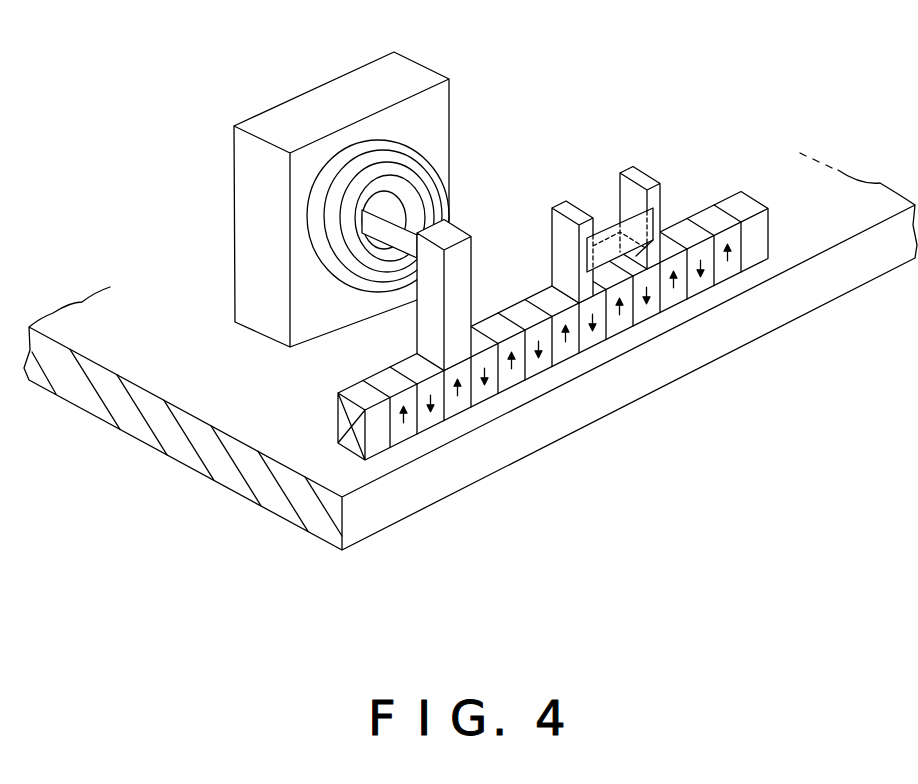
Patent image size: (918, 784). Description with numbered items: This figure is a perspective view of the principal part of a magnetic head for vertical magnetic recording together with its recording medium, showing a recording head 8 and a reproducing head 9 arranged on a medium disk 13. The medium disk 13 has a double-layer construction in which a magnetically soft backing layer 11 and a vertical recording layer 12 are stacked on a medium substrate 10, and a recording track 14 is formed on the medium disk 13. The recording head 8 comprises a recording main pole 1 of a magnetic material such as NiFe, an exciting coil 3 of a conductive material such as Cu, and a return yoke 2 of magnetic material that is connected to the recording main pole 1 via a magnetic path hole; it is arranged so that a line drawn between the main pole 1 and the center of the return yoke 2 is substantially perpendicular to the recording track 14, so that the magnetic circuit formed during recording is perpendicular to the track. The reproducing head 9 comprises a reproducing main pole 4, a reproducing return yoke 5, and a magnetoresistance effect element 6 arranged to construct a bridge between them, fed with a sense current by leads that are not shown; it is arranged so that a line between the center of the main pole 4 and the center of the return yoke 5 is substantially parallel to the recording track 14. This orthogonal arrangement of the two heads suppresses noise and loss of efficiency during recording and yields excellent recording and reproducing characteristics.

The recording main pole 1 is at (422, 317).
The return yoke 2 is at (245, 147).
The exciting coil 3 is at (315, 222).
The reproducing main pole 4 is at (570, 213).
The reproducing return yoke 5 is at (642, 178).
The magnetoresistance effect element 6 is at (607, 230).
The recording head 8 is at (271, 199).
The reproducing head 9 is at (611, 164).
The medium substrate 10 is at (512, 445).
The magnetically soft backing layer 11 is at (552, 357).
The vertical recording layer 12 is at (552, 336).
The medium disk 13 is at (470, 353).
The recording track 14 is at (335, 430).